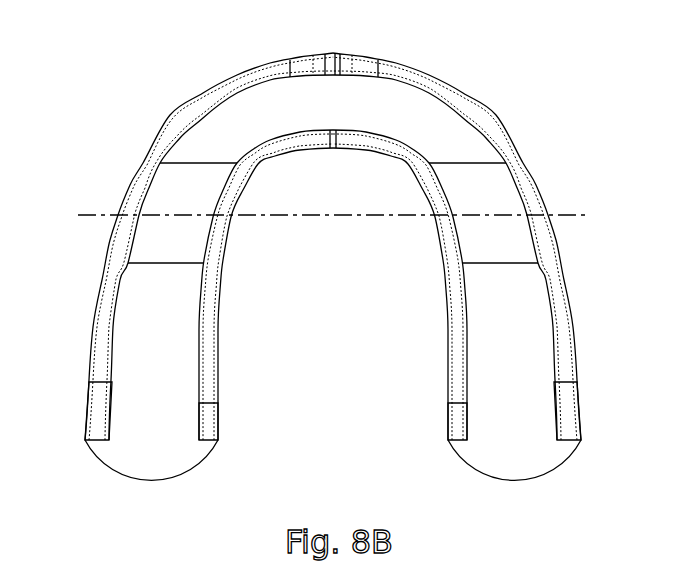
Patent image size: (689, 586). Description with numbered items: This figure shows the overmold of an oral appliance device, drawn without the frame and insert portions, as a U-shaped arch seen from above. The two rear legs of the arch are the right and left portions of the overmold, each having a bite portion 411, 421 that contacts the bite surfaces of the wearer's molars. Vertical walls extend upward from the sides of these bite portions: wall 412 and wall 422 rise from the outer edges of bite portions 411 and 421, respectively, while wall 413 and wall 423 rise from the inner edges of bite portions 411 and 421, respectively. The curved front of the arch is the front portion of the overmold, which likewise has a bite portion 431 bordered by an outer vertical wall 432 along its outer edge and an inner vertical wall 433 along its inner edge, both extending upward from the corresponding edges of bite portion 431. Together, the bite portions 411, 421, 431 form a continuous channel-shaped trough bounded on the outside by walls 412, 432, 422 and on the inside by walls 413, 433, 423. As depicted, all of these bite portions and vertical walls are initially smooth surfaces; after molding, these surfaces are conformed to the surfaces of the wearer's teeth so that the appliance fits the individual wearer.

The bite portion 411 is at (173, 433).
The outer vertical wall 412 is at (89, 392).
The inner vertical wall 413 is at (220, 400).
The bite portion 421 is at (535, 433).
The outer vertical wall 422 is at (581, 419).
The inner vertical wall 423 is at (448, 420).
The bite portion 431 is at (348, 113).
The outer vertical wall 432 is at (393, 61).
The inner vertical wall 433 is at (312, 152).